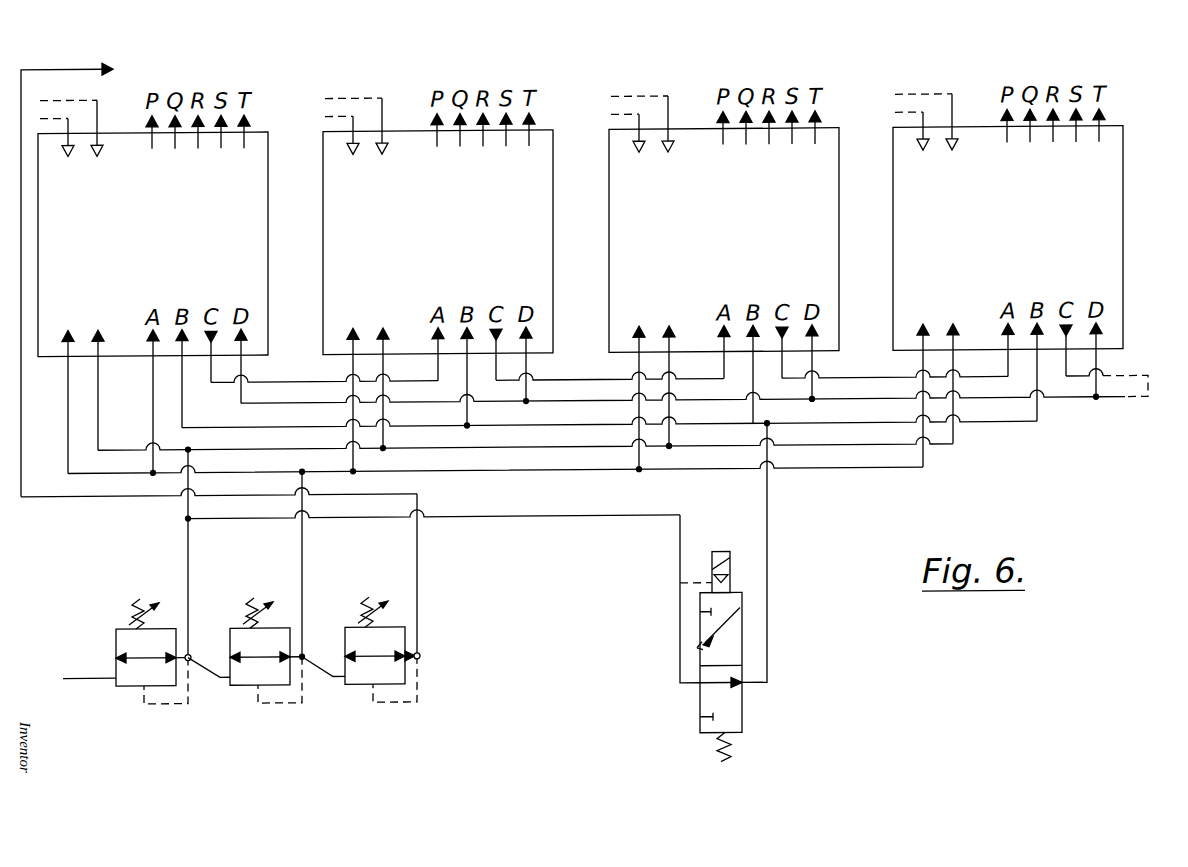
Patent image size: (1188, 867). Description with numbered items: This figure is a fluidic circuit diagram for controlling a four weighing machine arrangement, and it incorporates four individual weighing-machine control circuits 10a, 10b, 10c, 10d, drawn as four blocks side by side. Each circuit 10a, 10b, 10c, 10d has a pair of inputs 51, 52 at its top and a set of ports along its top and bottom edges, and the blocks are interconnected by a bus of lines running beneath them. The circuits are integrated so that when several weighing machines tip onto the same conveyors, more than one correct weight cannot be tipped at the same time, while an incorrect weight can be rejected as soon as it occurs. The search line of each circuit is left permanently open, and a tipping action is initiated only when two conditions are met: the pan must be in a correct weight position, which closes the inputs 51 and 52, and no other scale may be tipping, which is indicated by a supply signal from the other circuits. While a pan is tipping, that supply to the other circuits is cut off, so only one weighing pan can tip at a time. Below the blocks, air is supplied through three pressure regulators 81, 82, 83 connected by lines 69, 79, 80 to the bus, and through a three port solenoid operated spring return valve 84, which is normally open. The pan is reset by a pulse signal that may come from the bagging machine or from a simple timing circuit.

The circuit 10a is at (138, 253).
The circuit 10b is at (423, 253).
The circuit 10c is at (709, 253).
The circuit 10d is at (993, 253).
The input 51 is at (487, 149).
The input 52 is at (506, 140).
The pressure line 69 is at (188, 577).
The pressure line 79 is at (302, 577).
The pressure line 80 is at (417, 577).
The pressure regulator 81 is at (121, 685).
The pressure regulator 82 is at (240, 683).
The pressure regulator 83 is at (357, 683).
The three port solenoid operated spring return valve 84 is at (713, 706).